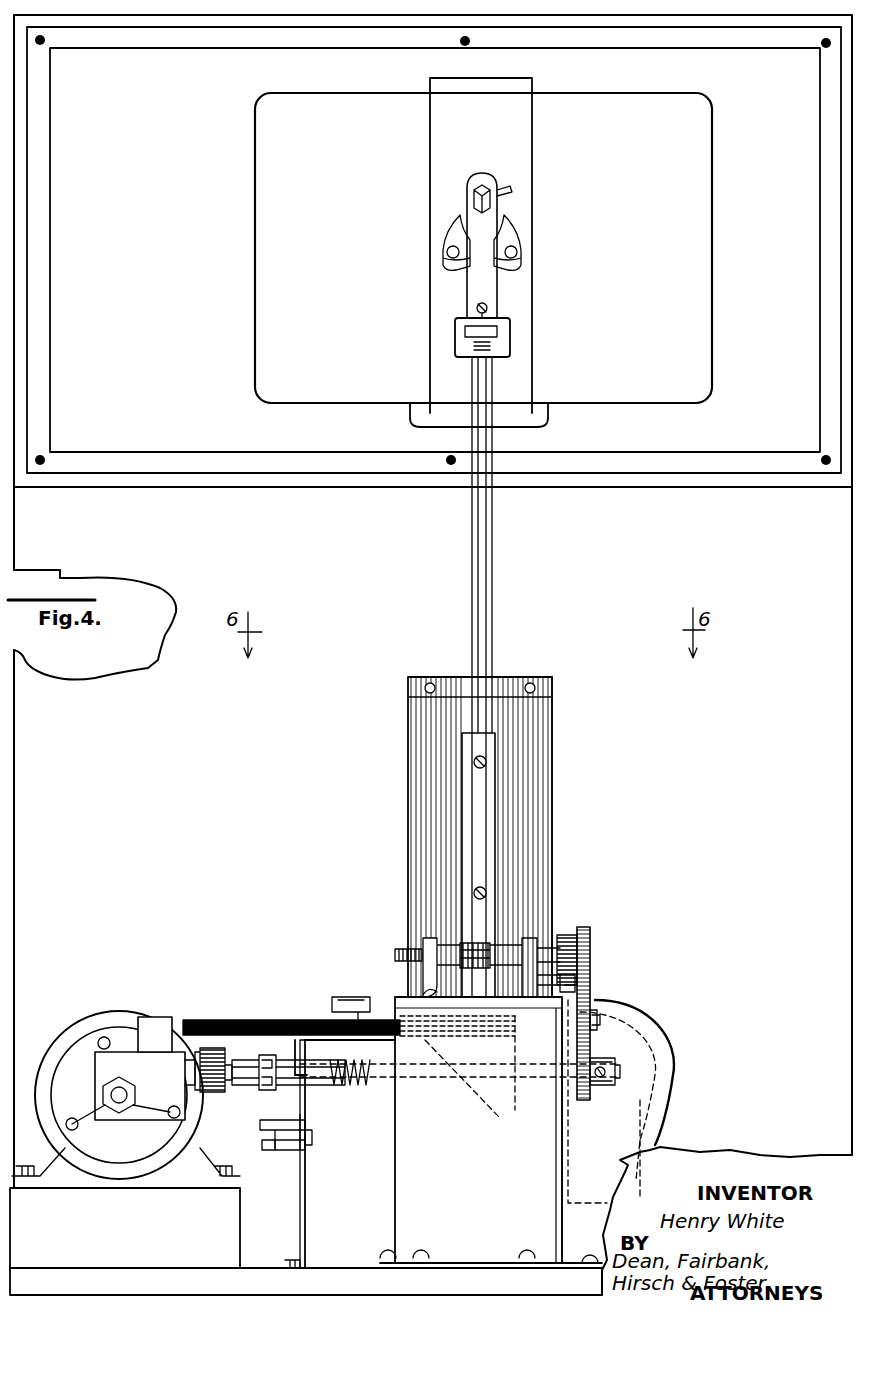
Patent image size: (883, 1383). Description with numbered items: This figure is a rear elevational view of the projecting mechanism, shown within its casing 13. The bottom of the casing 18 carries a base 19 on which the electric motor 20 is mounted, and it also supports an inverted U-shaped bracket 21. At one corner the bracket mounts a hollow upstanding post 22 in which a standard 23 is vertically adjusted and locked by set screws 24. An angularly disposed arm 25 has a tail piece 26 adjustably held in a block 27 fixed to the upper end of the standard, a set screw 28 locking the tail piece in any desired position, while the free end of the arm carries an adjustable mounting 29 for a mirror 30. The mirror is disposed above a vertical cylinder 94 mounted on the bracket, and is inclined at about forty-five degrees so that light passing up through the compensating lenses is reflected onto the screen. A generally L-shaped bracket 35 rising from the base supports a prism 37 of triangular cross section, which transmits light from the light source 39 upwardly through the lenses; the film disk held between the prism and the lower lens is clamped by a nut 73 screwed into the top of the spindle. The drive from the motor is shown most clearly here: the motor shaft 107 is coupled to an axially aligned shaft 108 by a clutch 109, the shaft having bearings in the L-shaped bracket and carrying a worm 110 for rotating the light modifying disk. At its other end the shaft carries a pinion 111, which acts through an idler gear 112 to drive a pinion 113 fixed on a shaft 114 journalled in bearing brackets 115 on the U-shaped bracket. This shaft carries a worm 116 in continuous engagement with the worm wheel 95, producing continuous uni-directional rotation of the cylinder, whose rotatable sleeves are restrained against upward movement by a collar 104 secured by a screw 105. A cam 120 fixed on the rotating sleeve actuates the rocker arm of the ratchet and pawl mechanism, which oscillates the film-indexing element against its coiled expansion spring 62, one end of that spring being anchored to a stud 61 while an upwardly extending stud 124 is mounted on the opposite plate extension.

The cabinet panel 13 is at (197, 433).
The bottom of the casing 18 is at (258, 1285).
The base 19 is at (228, 1230).
The electric motor 20 is at (78, 1052).
The inverted U-shaped bracket 21 is at (400, 1188).
The hollow upstanding post 22 is at (485, 815).
The standard 23 is at (483, 588).
The set screws 24 is at (572, 873).
The angularly disposed arm 25 is at (483, 287).
The tail piece 26 is at (490, 331).
The block 27 is at (503, 348).
The set screw 28 is at (470, 307).
The adjustable mounting 29 is at (508, 236).
The mirror 30 is at (272, 292).
The L-shaped bracket 35 is at (313, 1200).
The prism 37 is at (490, 1100).
The light source 39 is at (645, 1040).
The stud 61 is at (270, 1152).
The coiled expansion spring 62 is at (285, 1152).
The nut 73 is at (343, 997).
The vertical cylinder 94 is at (545, 772).
The worm wheel 95 is at (397, 952).
The collar 104 is at (505, 678).
The screw 105 is at (530, 690).
The motor shaft 107 is at (232, 1060).
The shaft 108 is at (285, 1060).
The clutch 109 is at (292, 1093).
The worm 110 is at (350, 1085).
The pinion 111 is at (590, 1092).
The idler gear 112 is at (592, 1000).
The pinion 113 is at (590, 938).
The shaft 114 is at (512, 938).
The bearing brackets 115 is at (425, 940).
The worm 116 is at (470, 946).
The cam 120 is at (578, 992).
The stud 124 is at (265, 1120).